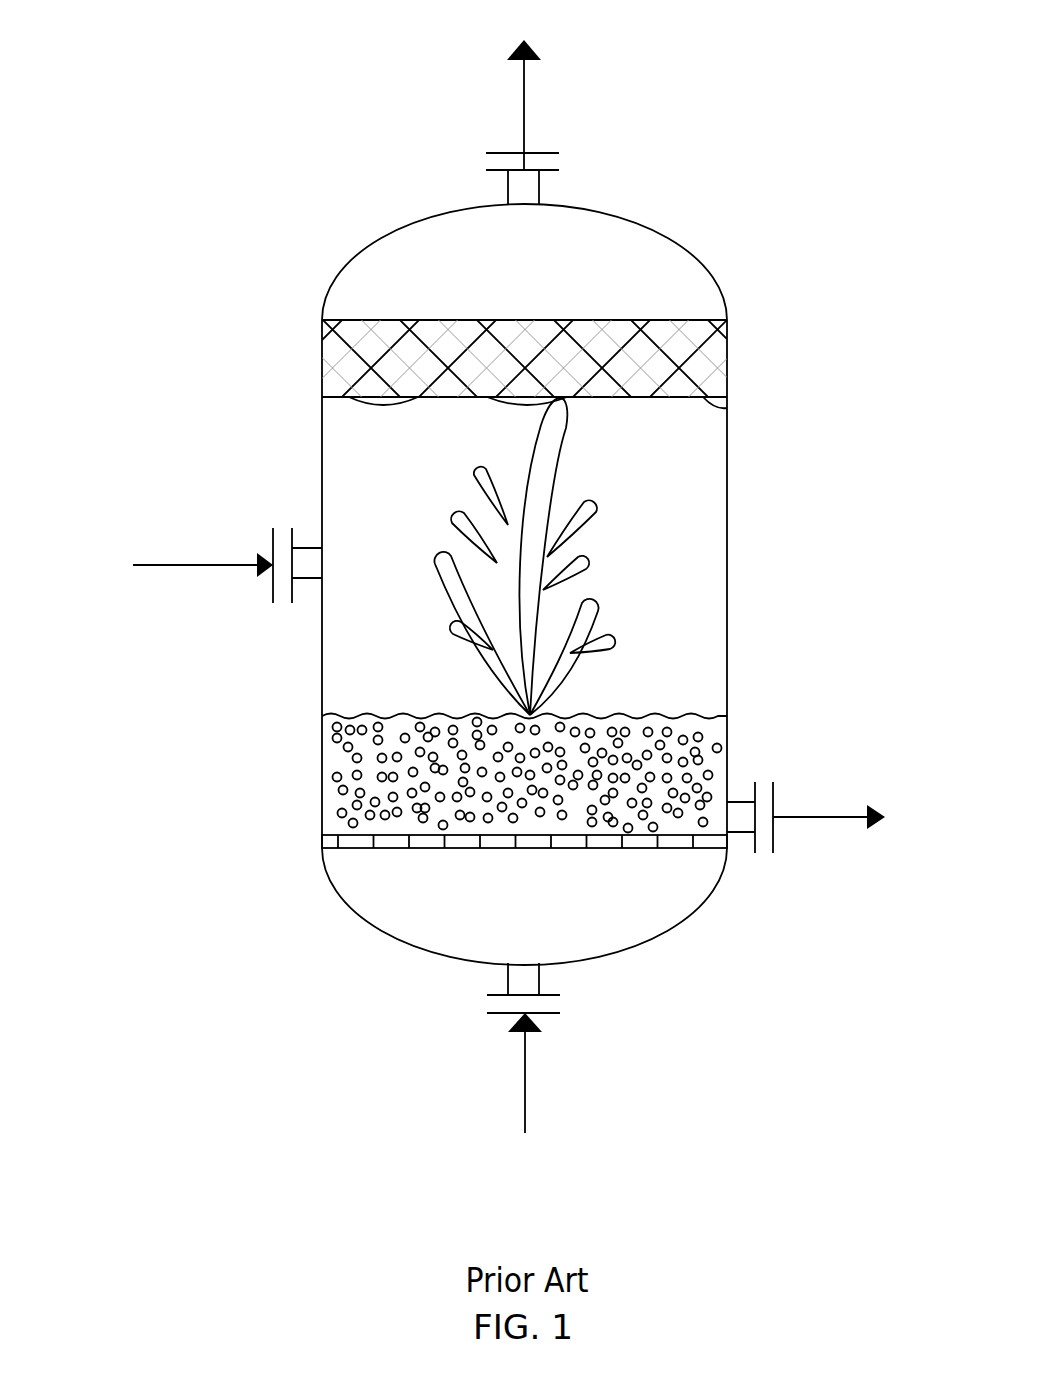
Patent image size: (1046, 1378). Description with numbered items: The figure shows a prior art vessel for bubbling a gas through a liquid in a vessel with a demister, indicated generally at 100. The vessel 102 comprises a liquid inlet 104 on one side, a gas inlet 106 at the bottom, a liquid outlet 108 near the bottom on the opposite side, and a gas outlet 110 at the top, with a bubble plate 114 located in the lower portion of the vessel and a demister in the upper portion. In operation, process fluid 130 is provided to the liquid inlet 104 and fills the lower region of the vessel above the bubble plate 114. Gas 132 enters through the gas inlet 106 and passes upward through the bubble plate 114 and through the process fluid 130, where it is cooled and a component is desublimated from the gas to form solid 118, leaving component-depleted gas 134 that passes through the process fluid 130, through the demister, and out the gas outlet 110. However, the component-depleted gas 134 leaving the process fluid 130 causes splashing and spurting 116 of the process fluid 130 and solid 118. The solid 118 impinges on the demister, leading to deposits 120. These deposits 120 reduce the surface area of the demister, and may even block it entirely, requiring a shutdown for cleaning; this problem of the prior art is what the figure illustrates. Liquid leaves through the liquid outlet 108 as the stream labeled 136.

The prior art vessel for bubbling a gas through a liquid with a demister 100 is at (180, 38).
The vessel 102 is at (390, 233).
The liquid inlet 104 is at (307, 583).
The gas inlet 106 is at (540, 980).
The liquid outlet 108 is at (743, 832).
The gas outlet 110 is at (540, 192).
The bubble plate 114 is at (355, 848).
The splashing and spurting 116 is at (583, 513).
The solid 118 is at (722, 750).
The deposits 120 is at (381, 407).
The process fluid 130 is at (332, 800).
The gas 132 is at (525, 1097).
The component-depleted gas 134 is at (522, 85).
The liquid outlet stream 136 is at (859, 817).